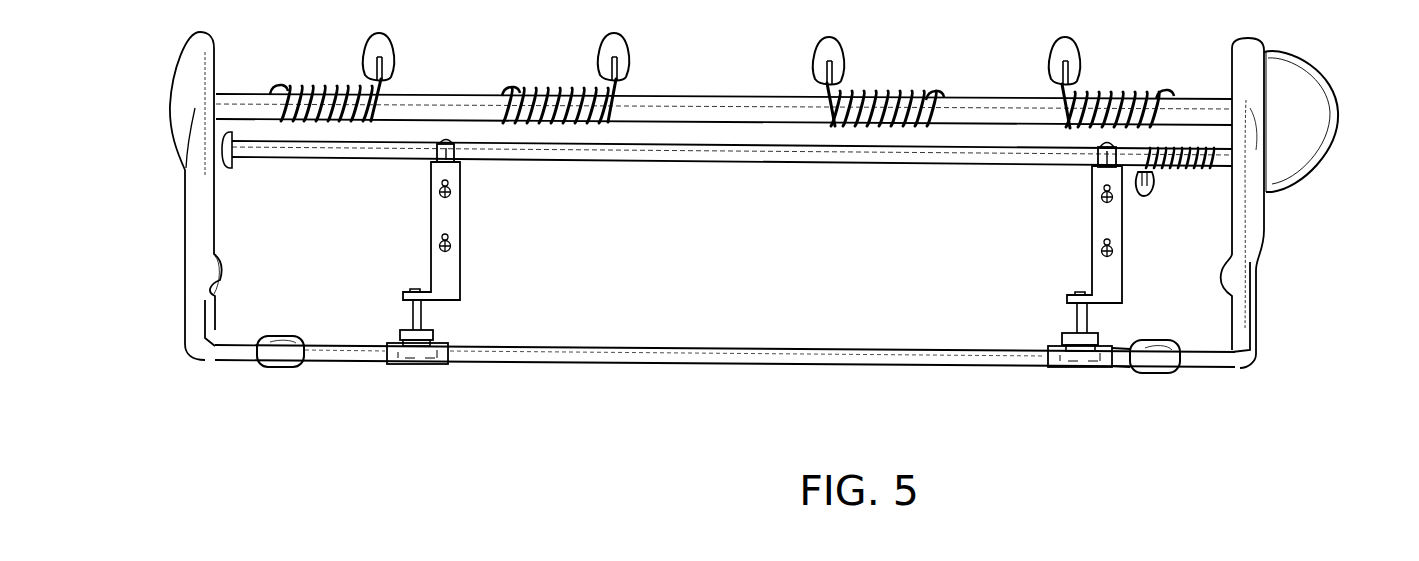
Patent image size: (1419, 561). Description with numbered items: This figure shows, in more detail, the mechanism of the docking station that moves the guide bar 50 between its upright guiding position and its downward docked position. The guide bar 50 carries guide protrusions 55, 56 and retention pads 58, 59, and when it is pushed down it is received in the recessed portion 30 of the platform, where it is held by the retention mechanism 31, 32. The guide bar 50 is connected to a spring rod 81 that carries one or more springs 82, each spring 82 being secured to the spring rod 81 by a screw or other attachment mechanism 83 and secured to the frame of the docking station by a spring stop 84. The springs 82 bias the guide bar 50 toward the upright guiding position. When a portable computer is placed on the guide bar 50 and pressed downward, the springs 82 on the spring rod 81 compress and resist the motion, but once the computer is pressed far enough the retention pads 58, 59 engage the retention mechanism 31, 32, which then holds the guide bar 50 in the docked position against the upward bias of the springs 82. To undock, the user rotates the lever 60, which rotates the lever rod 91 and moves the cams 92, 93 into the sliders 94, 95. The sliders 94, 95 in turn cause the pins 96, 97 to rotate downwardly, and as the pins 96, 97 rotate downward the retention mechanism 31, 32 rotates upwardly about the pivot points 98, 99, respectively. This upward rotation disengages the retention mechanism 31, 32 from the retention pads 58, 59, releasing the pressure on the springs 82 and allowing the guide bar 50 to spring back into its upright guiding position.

The recessed portion 30 is at (558, 366).
The retention mechanism 31 is at (440, 341).
The retention mechanism 32 is at (1105, 346).
The guide bar 50 is at (187, 332).
The guide protrusion 55 is at (275, 362).
The guide protrusion 56 is at (1175, 378).
The retention pad 58 is at (443, 366).
The retention pad 59 is at (1058, 368).
The lever 60 is at (1326, 100).
The spring rod 81 is at (742, 100).
The spring 82 is at (1121, 96).
The attachment mechanism 83 is at (1162, 90).
The spring stop 84 is at (1058, 70).
The lever rod 91 is at (767, 169).
The cam 92 is at (458, 160).
The cam 93 is at (1096, 164).
The slider 94 is at (440, 222).
The slider 95 is at (1100, 222).
The pin 96 is at (410, 297).
The pin 97 is at (1075, 313).
The pivot point 98 is at (400, 335).
The pivot point 99 is at (1060, 341).